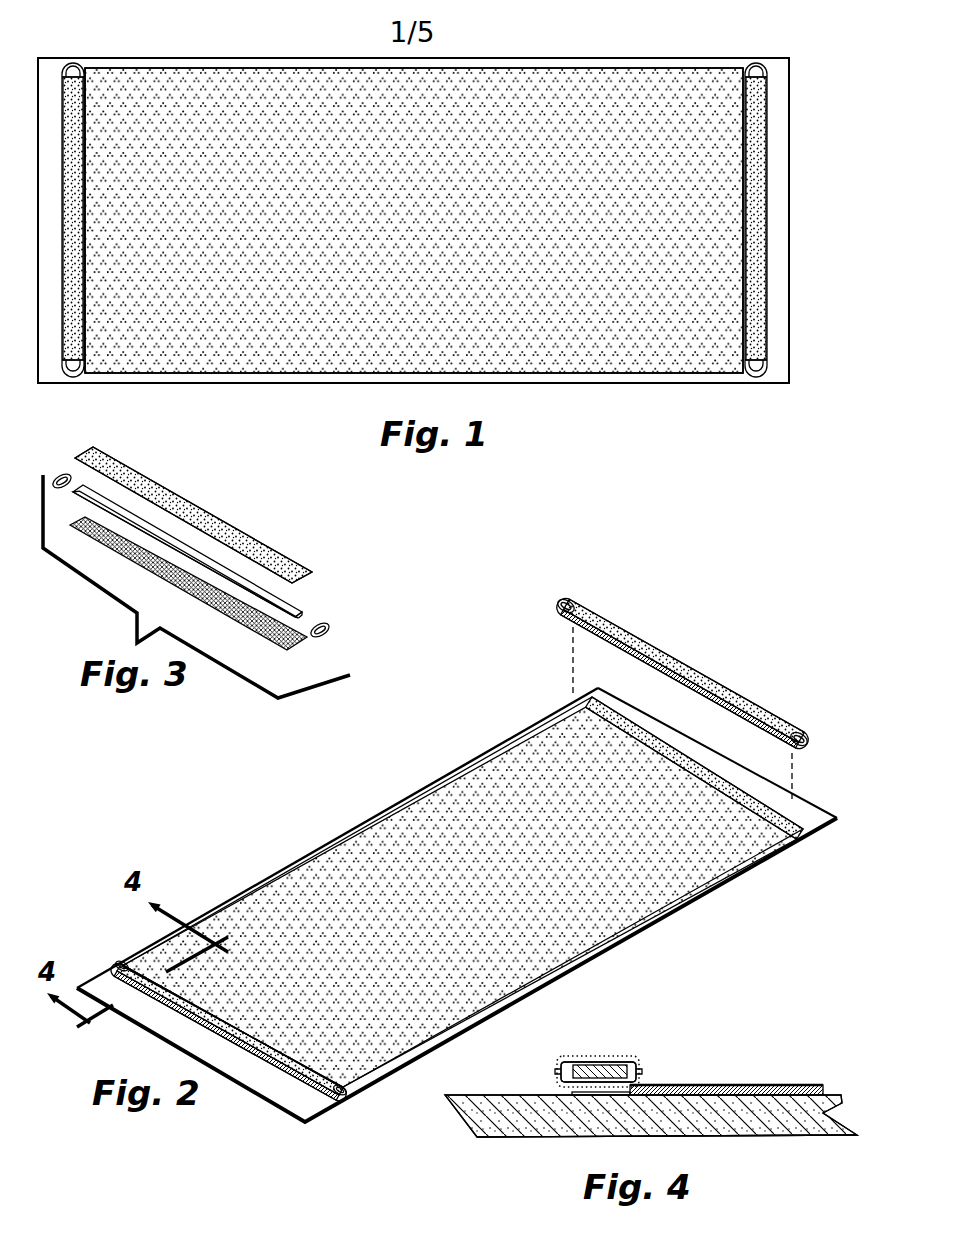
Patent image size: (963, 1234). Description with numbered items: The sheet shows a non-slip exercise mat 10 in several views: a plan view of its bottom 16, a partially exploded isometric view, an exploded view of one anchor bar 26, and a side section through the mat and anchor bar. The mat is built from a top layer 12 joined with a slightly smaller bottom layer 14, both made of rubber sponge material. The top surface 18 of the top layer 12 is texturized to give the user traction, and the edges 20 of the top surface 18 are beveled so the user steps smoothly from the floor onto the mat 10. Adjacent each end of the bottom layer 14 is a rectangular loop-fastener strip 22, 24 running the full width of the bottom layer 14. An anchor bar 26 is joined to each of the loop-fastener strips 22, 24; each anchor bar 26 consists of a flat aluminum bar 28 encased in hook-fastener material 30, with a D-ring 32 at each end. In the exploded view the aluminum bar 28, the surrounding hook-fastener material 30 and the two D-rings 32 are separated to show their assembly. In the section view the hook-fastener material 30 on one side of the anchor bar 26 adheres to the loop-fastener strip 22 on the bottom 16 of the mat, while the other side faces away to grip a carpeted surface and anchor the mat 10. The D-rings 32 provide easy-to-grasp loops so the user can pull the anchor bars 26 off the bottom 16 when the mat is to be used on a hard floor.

In FIG. 1, the non-slip exercise mat 10 is at (310, 45).
In FIG. 1, the top layer 12 is at (582, 63).
In FIG. 2, the top layer 12 is at (615, 707).
In FIG. 4, the top layer 12 is at (790, 1127).
In FIG. 1, the bottom layer 14 is at (307, 291).
In FIG. 2, the bottom layer 14 is at (470, 795).
In FIG. 4, the bottom layer 14 is at (760, 1085).
In FIG. 1, the bottom 16 is at (550, 380).
In FIG. 4, the bottom 16 is at (680, 1085).
In FIG. 4, the top surface 18 is at (723, 1138).
In FIG. 1, the edges 20 is at (790, 100).
In FIG. 2, the edges 20 is at (280, 1112).
In FIG. 4, the edges 20 is at (460, 1120).
In FIG. 2, the loop-fastener strip 22 is at (230, 1030).
In FIG. 4, the loop-fastener strip 22 is at (573, 1097).
In FIG. 2, the loop-fastener strip 24 is at (707, 773).
In FIG. 1, the anchor bar 26 is at (77, 293).
In FIG. 3, the anchor bar 26 is at (312, 537).
In FIG. 2, the anchor bar 26 is at (645, 640).
In FIG. 4, the anchor bar 26 is at (562, 1070).
In FIG. 3, the aluminum bar 28 is at (300, 604).
In FIG. 4, the aluminum bar 28 is at (610, 1066).
In FIG. 3, the hook-fastener material 30 is at (190, 502).
In FIG. 4, the hook-fastener material 30 is at (587, 1053).
In FIG. 1, the D-ring 32 is at (77, 64).
In FIG. 3, the D-ring 32 is at (60, 477).
In FIG. 2, the D-ring 32 is at (555, 598).